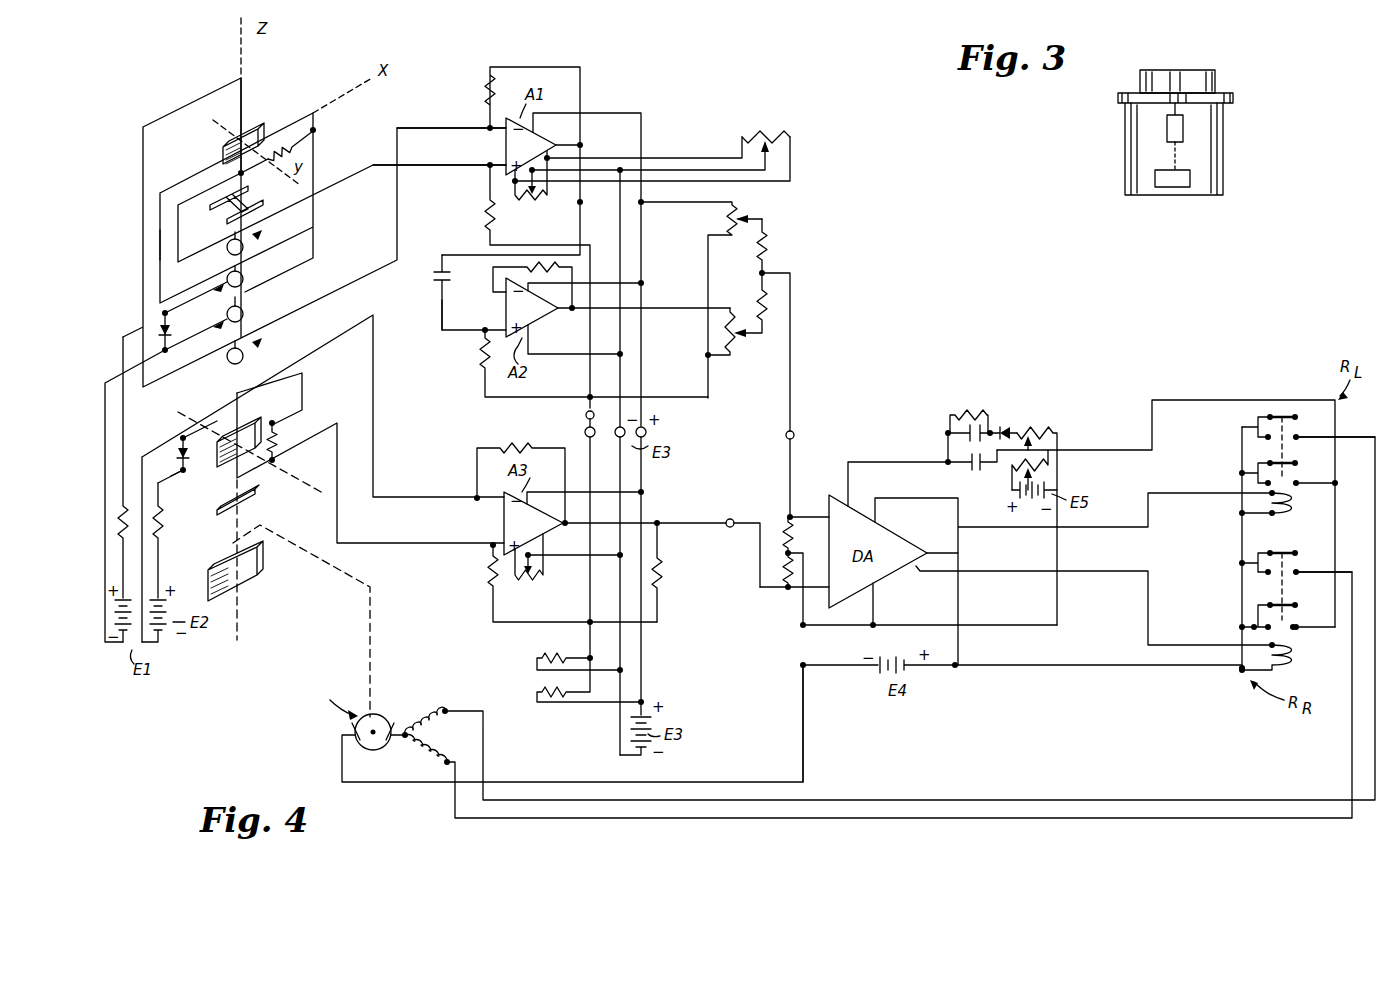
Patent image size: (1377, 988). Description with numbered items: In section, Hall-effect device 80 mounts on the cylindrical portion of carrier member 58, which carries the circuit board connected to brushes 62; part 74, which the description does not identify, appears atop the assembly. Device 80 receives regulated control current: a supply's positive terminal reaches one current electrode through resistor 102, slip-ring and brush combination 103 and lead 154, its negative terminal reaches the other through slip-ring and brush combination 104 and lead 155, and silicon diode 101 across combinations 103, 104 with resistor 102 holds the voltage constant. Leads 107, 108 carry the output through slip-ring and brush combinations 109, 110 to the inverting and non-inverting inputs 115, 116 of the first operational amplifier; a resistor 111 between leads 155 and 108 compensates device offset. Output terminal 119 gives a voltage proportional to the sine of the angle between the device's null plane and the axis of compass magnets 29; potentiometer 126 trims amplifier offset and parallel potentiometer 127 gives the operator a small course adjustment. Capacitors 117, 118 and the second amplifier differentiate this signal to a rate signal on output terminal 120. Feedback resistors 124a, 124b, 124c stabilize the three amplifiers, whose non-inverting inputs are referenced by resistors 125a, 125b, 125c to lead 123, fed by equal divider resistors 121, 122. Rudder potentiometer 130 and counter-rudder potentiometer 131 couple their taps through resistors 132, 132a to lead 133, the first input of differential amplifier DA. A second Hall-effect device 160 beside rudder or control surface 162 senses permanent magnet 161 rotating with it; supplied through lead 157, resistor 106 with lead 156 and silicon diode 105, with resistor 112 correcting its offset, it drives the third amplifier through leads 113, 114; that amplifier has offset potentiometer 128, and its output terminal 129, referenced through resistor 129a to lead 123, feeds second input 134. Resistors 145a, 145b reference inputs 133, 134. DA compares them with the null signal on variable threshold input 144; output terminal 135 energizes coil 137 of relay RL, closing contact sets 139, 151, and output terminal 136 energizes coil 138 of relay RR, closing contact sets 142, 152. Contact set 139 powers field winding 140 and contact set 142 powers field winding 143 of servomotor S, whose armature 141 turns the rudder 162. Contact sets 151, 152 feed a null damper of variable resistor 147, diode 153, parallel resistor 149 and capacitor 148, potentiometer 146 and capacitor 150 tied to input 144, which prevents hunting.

In FIG. 3, the cap 74 is at (1138, 83).
In FIG. 3, the flange 58 is at (1238, 102).
In FIG. 3, the magnet member 62 is at (1186, 130).
In FIG. 4, the magnet block 80 is at (250, 128).
In FIG. 3, the magnet block 80 is at (1190, 177).
In FIG. 4, the plane / coil frame 107 is at (223, 88).
In FIG. 4, the plane 155 is at (318, 112).
In FIG. 4, the plane edge 154 is at (196, 156).
In FIG. 4, the coil plane 108 is at (230, 176).
In FIG. 4, the resistor 111 is at (300, 144).
In FIG. 4, the magnet 29 is at (246, 208).
In FIG. 4, the terminal 110 is at (252, 237).
In FIG. 4, the terminal 103 is at (243, 267).
In FIG. 4, the terminal 104 is at (249, 301).
In FIG. 4, the terminal 109 is at (252, 345).
In FIG. 4, the diode 101 is at (172, 321).
In FIG. 4, the resistor 102 is at (118, 518).
In FIG. 4, the resistor 106 is at (158, 537).
In FIG. 4, the diode 105 is at (152, 468).
In FIG. 4, the lead 156 is at (188, 470).
In FIG. 4, the plane 113 is at (366, 332).
In FIG. 4, the plane 114 is at (339, 423).
In FIG. 4, the plane 157 is at (292, 400).
In FIG. 4, the resistor 112 is at (280, 428).
In FIG. 4, the magnet block 160 is at (222, 432).
In FIG. 4, the magnet bar 161 is at (242, 506).
In FIG. 4, the magnet block 162 is at (248, 580).
In FIG. 4, the motor 141 is at (357, 756).
In FIG. 4, the coil 143 is at (421, 716).
In FIG. 4, the coil 140 is at (436, 756).
In FIG. 4, the input lead 115 is at (482, 130).
In FIG. 4, the input lead 116 is at (480, 161).
In FIG. 4, the feedback resistor 124a is at (482, 98).
In FIG. 4, the resistor 125a is at (488, 199).
In FIG. 4, the output lead 119 is at (566, 140).
In FIG. 4, the potentiometer 126 is at (537, 198).
In FIG. 4, the potentiometer 127 is at (761, 134).
In FIG. 4, the capacitor 117 is at (434, 272).
In FIG. 4, the lead 118 is at (432, 290).
In FIG. 4, the feedback resistor 124b is at (539, 260).
In FIG. 4, the output lead 120 is at (564, 312).
In FIG. 4, the resistor 125b is at (480, 354).
In FIG. 4, the switch 123 is at (584, 414).
In FIG. 4, the feedback resistor 124c is at (498, 448).
In FIG. 4, the resistor 125c is at (486, 573).
In FIG. 4, the potentiometer 128 is at (514, 586).
In FIG. 4, the switch terminal 129 is at (736, 518).
In FIG. 4, the resistor 129a is at (666, 572).
In FIG. 4, the resistor 121 is at (568, 644).
In FIG. 4, the resistor 122 is at (544, 686).
In FIG. 4, the potentiometer 130 is at (722, 220).
In FIG. 4, the resistor 132 is at (770, 244).
In FIG. 4, the resistor 132a is at (786, 300).
In FIG. 4, the potentiometer 131 is at (744, 352).
In FIG. 4, the lead 133 is at (792, 382).
In FIG. 4, the resistor 145a is at (808, 571).
In FIG. 4, the resistor 145b is at (780, 586).
In FIG. 4, the lead 134 is at (812, 606).
In FIG. 4, the lead 144 is at (854, 474).
In FIG. 4, the output lead 135 is at (938, 514).
In FIG. 4, the output lead 136 is at (1094, 599).
In FIG. 4, the capacitor 148 is at (944, 440).
In FIG. 4, the resistor 149 is at (970, 408).
In FIG. 4, the diode 153 is at (1008, 410).
In FIG. 4, the potentiometer 147 is at (1036, 430).
In FIG. 4, the potentiometer 146 is at (1056, 468).
In FIG. 4, the capacitor 150 is at (980, 474).
In FIG. 4, the relay contact 139 is at (1296, 412).
In FIG. 4, the relay contact 151 is at (1292, 474).
In FIG. 4, the relay coil 137 is at (1292, 514).
In FIG. 4, the relay contact 142 is at (1286, 548).
In FIG. 4, the relay contact 152 is at (1292, 600).
In FIG. 4, the relay coil 138 is at (1290, 662).